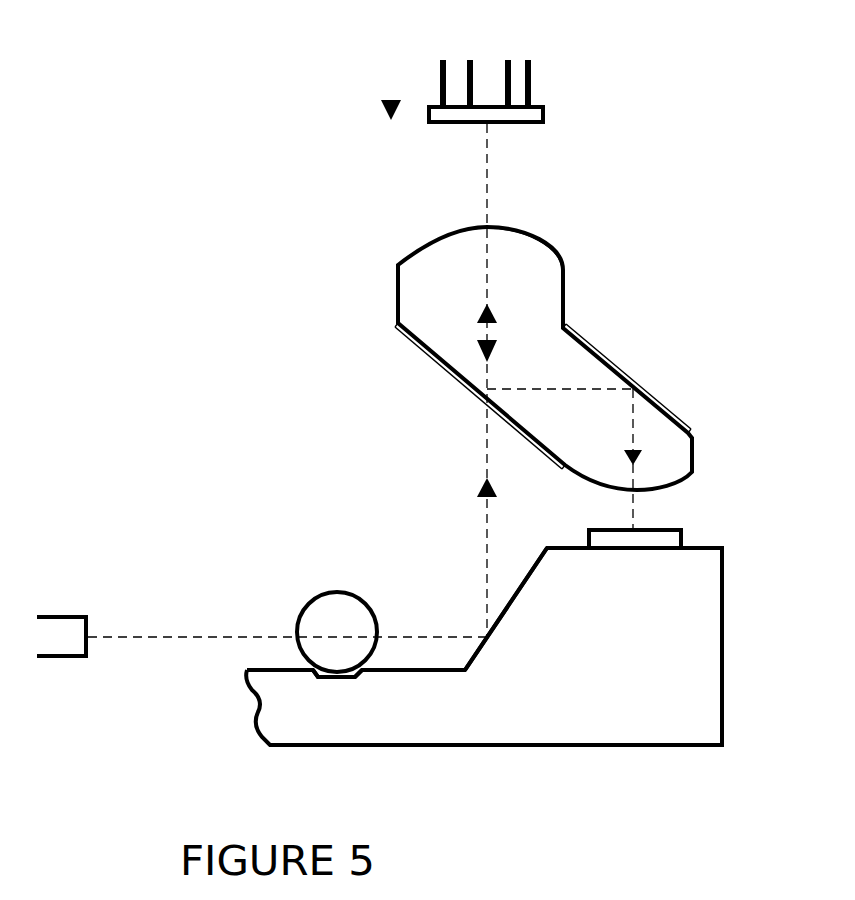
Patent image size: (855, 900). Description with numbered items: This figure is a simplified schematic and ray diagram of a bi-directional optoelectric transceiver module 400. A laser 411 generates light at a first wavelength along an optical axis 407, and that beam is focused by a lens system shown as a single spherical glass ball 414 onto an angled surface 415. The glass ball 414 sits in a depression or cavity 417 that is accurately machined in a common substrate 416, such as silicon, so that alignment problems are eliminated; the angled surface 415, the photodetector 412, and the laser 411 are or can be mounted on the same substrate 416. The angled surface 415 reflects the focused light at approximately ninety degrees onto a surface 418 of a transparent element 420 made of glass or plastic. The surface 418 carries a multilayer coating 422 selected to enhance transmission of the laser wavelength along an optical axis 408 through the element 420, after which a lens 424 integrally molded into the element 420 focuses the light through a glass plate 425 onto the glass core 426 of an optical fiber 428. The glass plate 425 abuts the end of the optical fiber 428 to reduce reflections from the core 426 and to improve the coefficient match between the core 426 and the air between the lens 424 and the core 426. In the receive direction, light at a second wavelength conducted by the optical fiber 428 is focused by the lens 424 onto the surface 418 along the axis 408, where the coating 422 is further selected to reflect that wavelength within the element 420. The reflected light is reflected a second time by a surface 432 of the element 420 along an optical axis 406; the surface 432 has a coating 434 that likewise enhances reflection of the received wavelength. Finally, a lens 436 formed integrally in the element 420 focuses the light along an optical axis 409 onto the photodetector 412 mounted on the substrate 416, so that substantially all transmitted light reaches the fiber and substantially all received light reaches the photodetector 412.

The bi-directional optoelectric transceiver module 400 is at (188, 403).
The optical axis 406 is at (556, 371).
The optical axis 407 is at (243, 628).
The optical axis 408 is at (512, 197).
The optical axis 409 is at (661, 442).
The laser 411 is at (53, 622).
The photodetector 412 is at (687, 540).
The glass ball 414 is at (337, 600).
The angled surface 415 is at (503, 618).
The substrate 416 is at (447, 737).
The cavity 417 is at (317, 682).
The surface 418 is at (435, 363).
The element 420 is at (362, 320).
The coating 422 is at (553, 463).
The lens 424 is at (547, 242).
The glass plate 425 is at (546, 115).
The glass core 426 is at (493, 75).
The optical fiber 428 is at (360, 119).
The surface 432 is at (663, 400).
The coating 434 is at (598, 342).
The lens 436 is at (683, 478).